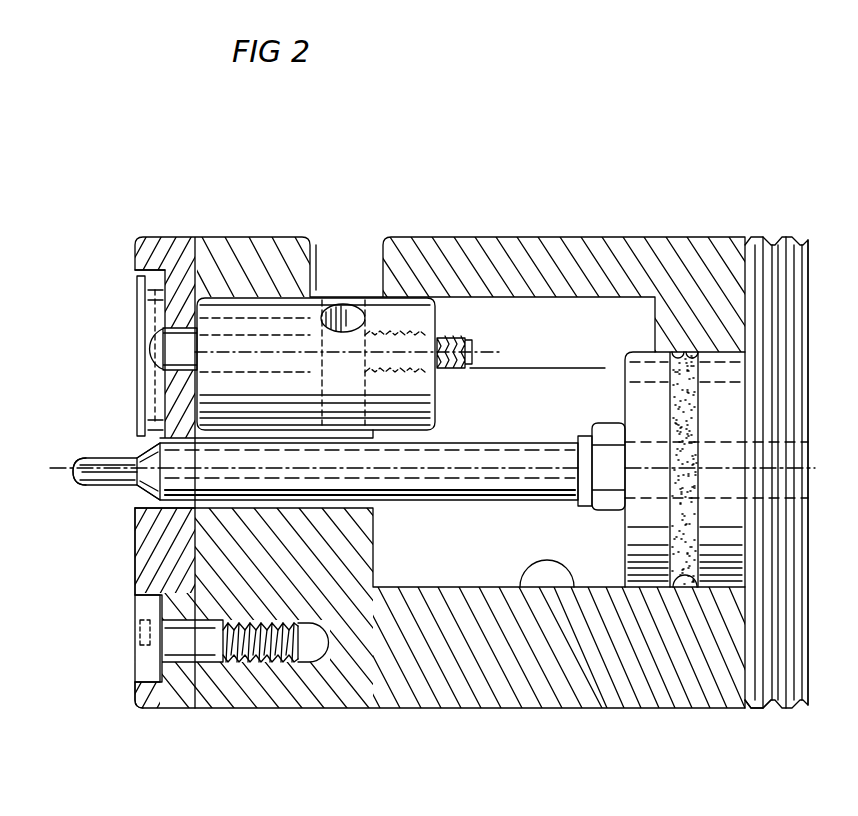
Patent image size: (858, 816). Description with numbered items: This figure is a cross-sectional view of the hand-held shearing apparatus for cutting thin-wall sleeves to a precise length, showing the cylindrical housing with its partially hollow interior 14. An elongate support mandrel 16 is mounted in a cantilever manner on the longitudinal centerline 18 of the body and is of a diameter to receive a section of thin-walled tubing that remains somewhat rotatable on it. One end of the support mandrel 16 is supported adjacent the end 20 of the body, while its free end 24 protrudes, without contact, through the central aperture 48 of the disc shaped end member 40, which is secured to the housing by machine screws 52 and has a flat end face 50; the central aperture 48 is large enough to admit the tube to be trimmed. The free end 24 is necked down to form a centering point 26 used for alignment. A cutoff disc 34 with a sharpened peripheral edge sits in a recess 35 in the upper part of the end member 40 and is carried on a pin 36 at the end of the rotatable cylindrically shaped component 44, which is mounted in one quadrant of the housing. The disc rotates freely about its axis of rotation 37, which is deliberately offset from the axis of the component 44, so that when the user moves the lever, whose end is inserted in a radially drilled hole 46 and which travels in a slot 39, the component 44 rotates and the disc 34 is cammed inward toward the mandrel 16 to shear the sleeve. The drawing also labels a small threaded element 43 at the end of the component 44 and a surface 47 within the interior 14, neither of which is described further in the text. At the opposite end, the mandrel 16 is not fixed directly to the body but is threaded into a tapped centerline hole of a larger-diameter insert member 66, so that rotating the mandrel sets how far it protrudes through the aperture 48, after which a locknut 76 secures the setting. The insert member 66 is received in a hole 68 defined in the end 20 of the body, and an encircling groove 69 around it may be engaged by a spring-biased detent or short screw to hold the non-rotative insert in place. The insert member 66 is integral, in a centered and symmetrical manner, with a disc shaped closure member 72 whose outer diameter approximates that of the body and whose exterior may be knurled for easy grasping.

The partially hollow interior 14 is at (575, 332).
The support mandrel 16 is at (468, 478).
The longitudinal centerline 18 is at (70, 470).
The end of body 20 is at (748, 245).
The free end of mandrel 24 is at (140, 447).
The centering point 26 is at (75, 486).
The cutoff disc 34 is at (140, 312).
The recess 35 is at (150, 270).
The pin 36 is at (150, 395).
The axis of rotation of cutoff disc 37 is at (165, 355).
The slot 39 is at (333, 262).
The disc shaped end member 40 is at (148, 705).
The set screw 43 is at (455, 345).
The cylindrically shaped component 44 is at (413, 312).
The hole 46 is at (350, 312).
The guide surface 47 is at (525, 368).
The central aperture 48 is at (140, 500).
The flat end face 50 is at (140, 565).
The machine screws 52 is at (175, 640).
The insert member 66 is at (652, 535).
The hole 68 is at (517, 572).
The encircling groove 69 is at (688, 560).
The closure member 72 is at (770, 700).
The locknut 76 is at (605, 430).